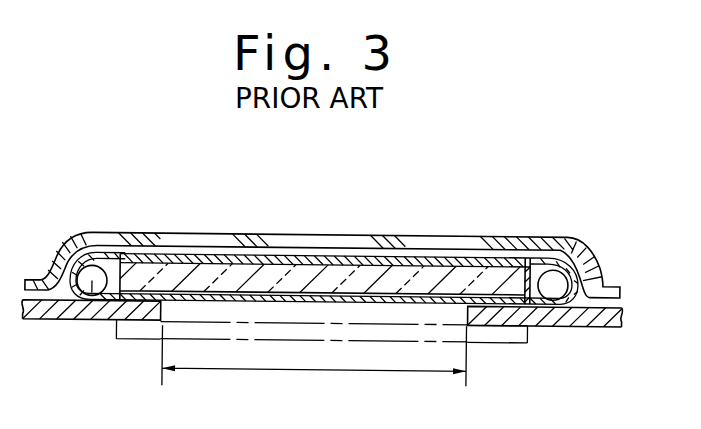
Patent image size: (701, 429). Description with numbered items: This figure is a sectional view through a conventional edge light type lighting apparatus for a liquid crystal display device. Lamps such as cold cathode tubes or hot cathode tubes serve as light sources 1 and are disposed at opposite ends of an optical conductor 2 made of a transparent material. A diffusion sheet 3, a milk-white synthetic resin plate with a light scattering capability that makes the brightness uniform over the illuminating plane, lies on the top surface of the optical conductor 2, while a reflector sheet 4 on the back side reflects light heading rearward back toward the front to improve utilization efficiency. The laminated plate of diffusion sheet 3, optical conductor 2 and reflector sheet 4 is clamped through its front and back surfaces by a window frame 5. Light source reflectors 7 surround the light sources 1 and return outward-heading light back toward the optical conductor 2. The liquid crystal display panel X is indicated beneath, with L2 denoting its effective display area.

The light source 1 is at (90, 295).
The optical conductor 2 is at (415, 282).
The diffusion sheet 3 is at (200, 292).
The reflector sheet 4 is at (340, 253).
The window frame 5 is at (101, 321).
The light source reflector 7 is at (57, 293).
The liquid crystal display panel X is at (480, 345).
The effective display area L2 is at (314, 366).